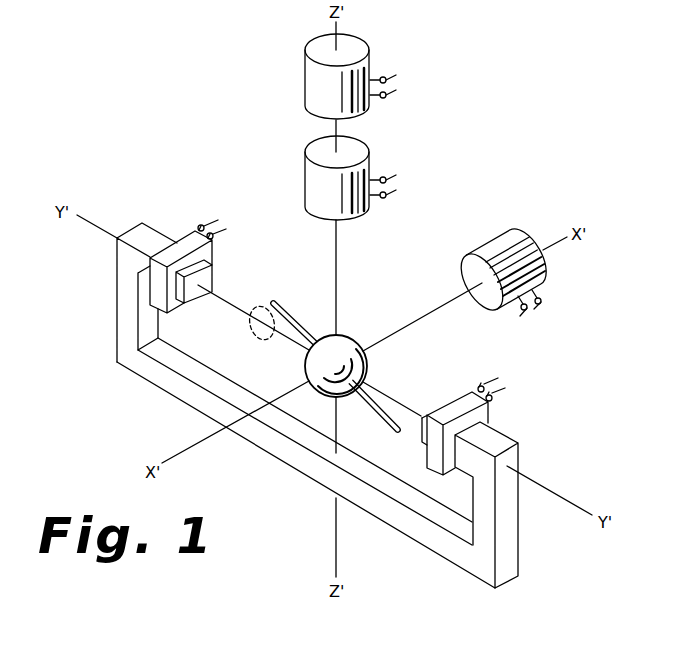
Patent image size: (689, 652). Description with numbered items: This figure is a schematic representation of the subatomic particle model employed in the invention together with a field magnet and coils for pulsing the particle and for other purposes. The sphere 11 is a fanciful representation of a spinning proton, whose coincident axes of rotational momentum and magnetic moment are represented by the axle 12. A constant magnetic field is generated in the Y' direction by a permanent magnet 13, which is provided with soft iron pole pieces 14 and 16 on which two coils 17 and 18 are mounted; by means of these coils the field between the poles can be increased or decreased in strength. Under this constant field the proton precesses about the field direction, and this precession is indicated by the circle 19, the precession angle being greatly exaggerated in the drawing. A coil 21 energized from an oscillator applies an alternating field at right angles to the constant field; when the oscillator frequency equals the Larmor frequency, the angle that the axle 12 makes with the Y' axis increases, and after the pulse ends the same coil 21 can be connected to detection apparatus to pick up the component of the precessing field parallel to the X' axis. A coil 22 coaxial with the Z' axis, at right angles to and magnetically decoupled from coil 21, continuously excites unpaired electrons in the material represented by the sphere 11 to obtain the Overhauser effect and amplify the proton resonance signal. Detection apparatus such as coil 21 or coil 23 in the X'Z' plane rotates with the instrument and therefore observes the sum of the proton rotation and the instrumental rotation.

The sphere 11 is at (368, 364).
The axle 12 is at (293, 318).
The permanent magnet 13 is at (120, 331).
The soft iron pole piece 14 is at (208, 277).
The soft iron pole piece 16 is at (440, 405).
The coil 17 is at (197, 238).
The coil 18 is at (487, 409).
The circle 19 is at (254, 328).
The coil 21 is at (498, 248).
The coil 22 is at (307, 183).
The coil 23 is at (307, 83).